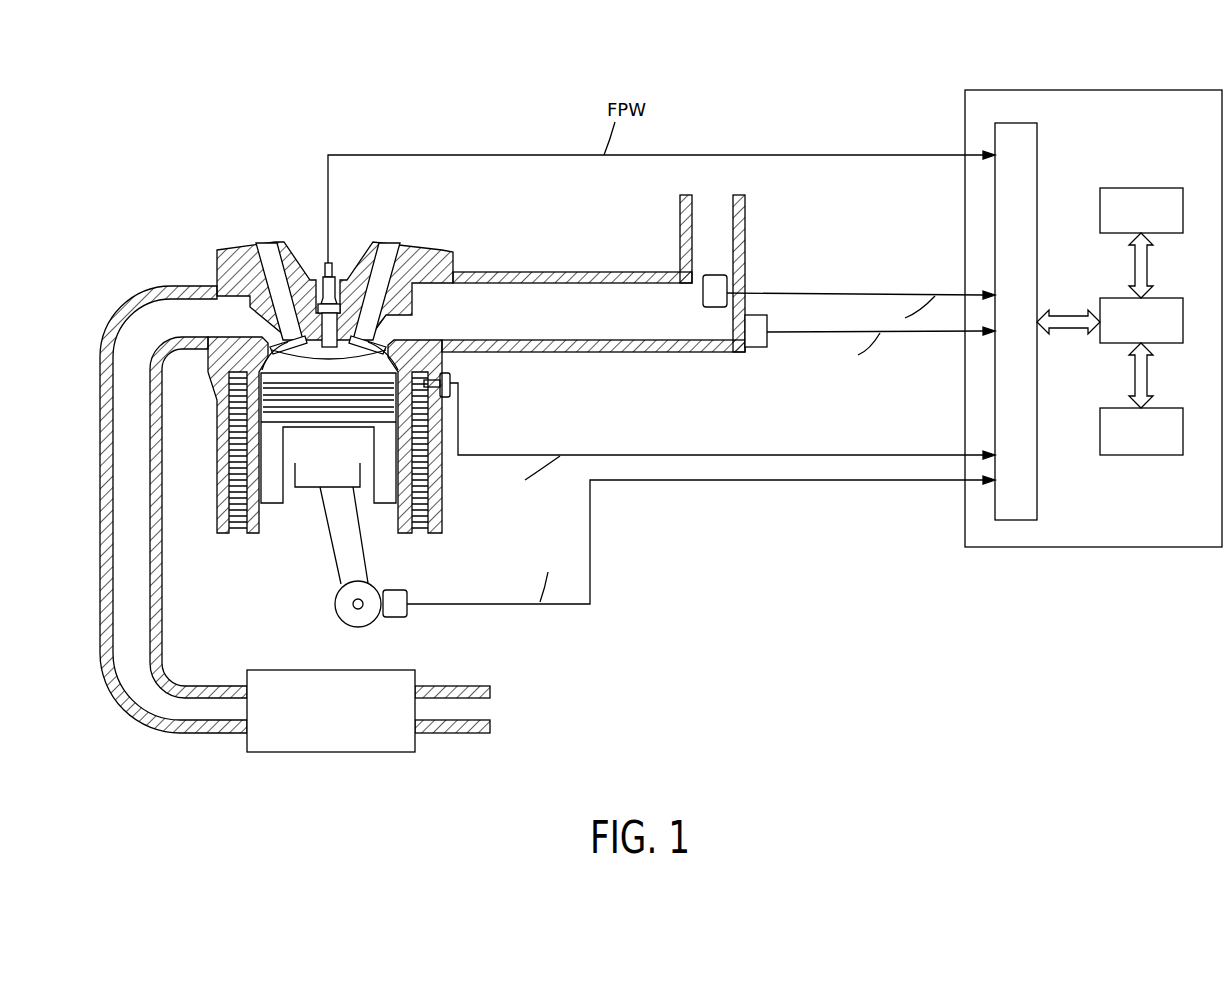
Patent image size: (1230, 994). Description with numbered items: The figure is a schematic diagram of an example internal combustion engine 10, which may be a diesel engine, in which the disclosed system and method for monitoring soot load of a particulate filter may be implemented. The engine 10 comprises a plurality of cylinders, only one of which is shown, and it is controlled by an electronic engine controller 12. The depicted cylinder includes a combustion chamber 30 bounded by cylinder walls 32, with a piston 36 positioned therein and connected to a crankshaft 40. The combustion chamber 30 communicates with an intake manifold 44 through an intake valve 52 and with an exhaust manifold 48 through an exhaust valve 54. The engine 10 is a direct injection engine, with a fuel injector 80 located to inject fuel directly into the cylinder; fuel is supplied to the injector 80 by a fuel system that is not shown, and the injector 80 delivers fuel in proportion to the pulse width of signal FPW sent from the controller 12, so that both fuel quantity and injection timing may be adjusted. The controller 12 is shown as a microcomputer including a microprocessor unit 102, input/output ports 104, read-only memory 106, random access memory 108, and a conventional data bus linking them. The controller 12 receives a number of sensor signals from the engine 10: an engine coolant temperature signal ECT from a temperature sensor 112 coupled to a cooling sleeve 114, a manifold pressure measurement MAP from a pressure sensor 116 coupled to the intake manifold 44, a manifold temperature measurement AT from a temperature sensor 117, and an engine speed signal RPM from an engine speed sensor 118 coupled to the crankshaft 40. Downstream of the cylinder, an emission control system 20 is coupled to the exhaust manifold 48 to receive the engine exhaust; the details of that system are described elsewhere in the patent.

The internal combustion engine 10 is at (188, 224).
The electronic engine controller 12 is at (1093, 292).
The emission control system 20 is at (298, 670).
The combustion chamber 30 is at (232, 432).
The cylinder walls 32 is at (262, 527).
The piston 36 is at (343, 465).
The crankshaft 40 is at (365, 612).
The intake manifold 44 is at (657, 320).
The exhaust manifold 48 is at (103, 375).
The intake valve 52 is at (377, 333).
The exhaust valve 54 is at (283, 333).
The fuel injector 80 is at (322, 270).
The microprocessor unit 102 is at (1170, 298).
The input/output ports 104 is at (1037, 142).
The read-only memory 106 is at (1141, 188).
The random access memory 108 is at (1170, 408).
The temperature sensor 112 is at (455, 385).
The cooling sleeve 114 is at (430, 540).
The pressure sensor 116 is at (716, 275).
The temperature sensor 117 is at (757, 350).
The engine speed sensor 118 is at (415, 612).